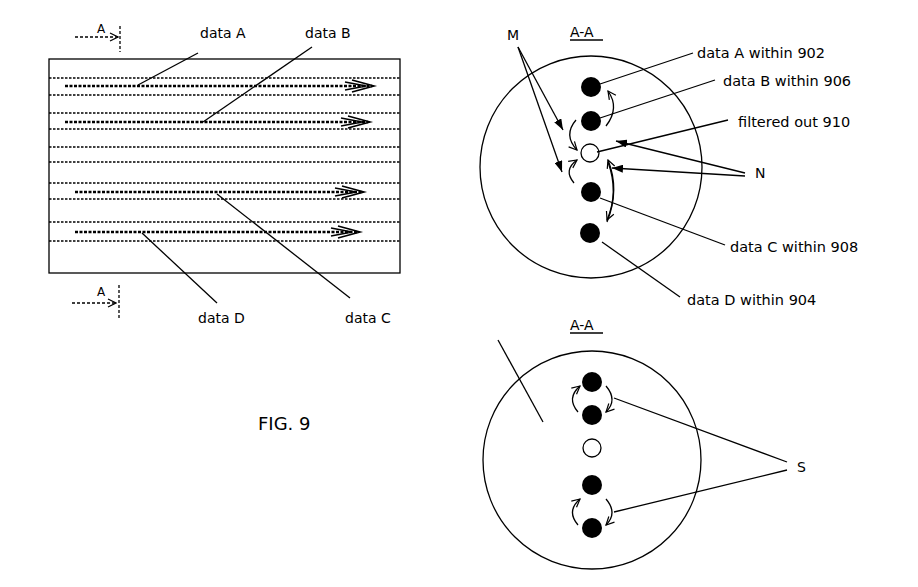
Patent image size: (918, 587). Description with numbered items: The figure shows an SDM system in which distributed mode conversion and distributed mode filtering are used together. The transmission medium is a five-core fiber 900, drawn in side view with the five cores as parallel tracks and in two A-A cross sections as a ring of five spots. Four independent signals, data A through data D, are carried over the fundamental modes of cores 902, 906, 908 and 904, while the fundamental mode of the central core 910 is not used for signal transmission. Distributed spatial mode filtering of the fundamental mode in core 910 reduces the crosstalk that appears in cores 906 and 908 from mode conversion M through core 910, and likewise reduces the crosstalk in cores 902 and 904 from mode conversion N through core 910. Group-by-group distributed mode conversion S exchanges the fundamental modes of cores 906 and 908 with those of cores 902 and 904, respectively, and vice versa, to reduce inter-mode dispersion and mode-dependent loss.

The five-core fiber 900 is at (135, 262).
The core 902 is at (392, 87).
The core 904 is at (380, 237).
The core 906 is at (392, 124).
The core 908 is at (393, 190).
The core 910 is at (392, 159).